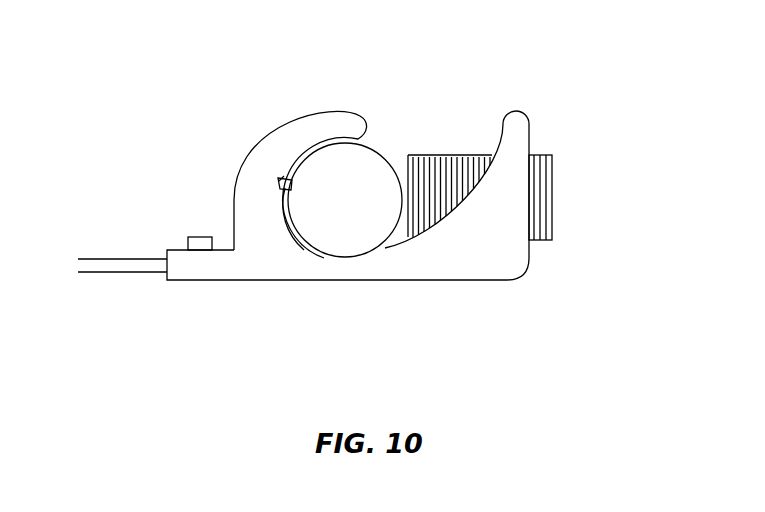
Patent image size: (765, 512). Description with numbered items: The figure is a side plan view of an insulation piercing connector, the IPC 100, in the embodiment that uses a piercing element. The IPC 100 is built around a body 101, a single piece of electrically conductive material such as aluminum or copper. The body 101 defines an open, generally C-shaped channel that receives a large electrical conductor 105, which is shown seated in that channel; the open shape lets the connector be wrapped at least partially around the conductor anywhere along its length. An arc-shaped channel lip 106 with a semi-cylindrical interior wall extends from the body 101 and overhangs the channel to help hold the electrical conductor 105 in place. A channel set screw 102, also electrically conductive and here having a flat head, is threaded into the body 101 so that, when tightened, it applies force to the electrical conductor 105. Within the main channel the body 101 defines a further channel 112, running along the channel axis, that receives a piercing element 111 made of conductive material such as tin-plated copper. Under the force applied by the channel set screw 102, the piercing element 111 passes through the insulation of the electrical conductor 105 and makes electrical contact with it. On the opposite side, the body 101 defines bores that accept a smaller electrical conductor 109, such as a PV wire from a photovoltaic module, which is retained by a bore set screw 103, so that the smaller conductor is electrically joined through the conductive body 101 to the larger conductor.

The IPC 100 is at (362, 32).
The body 101 is at (227, 267).
The channel set screw 102 is at (548, 183).
The bore set screw 103 is at (197, 243).
The electrical conductor 105 is at (377, 177).
The channel lip 106 is at (343, 127).
The electrical conductor 109 is at (122, 267).
The piercing element 111 is at (291, 190).
The channel 112 is at (278, 187).